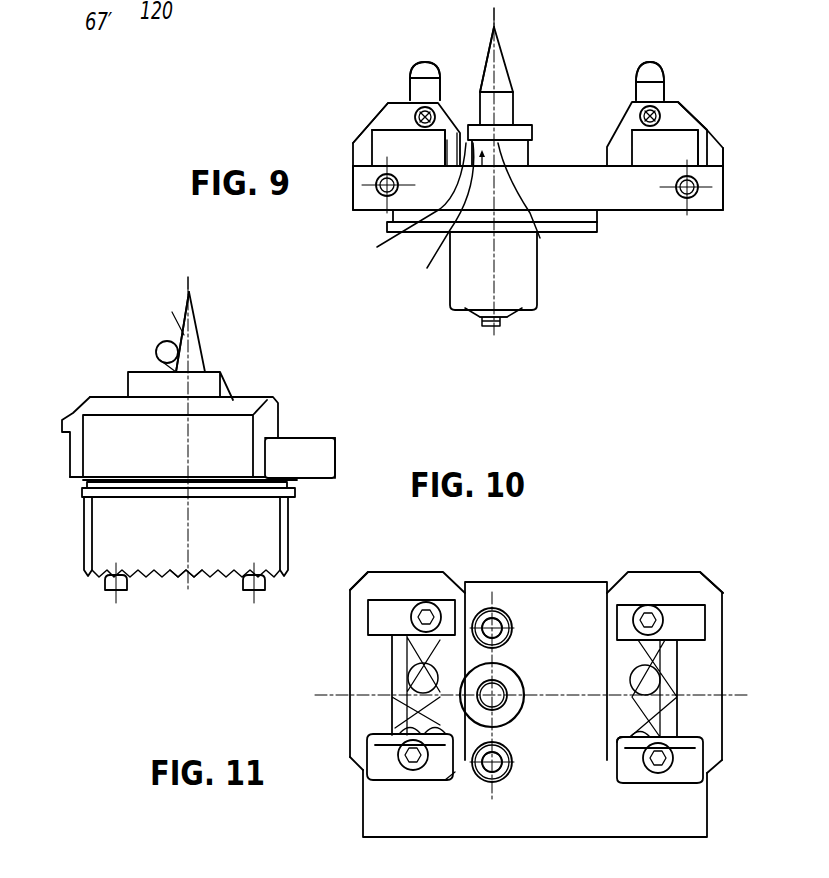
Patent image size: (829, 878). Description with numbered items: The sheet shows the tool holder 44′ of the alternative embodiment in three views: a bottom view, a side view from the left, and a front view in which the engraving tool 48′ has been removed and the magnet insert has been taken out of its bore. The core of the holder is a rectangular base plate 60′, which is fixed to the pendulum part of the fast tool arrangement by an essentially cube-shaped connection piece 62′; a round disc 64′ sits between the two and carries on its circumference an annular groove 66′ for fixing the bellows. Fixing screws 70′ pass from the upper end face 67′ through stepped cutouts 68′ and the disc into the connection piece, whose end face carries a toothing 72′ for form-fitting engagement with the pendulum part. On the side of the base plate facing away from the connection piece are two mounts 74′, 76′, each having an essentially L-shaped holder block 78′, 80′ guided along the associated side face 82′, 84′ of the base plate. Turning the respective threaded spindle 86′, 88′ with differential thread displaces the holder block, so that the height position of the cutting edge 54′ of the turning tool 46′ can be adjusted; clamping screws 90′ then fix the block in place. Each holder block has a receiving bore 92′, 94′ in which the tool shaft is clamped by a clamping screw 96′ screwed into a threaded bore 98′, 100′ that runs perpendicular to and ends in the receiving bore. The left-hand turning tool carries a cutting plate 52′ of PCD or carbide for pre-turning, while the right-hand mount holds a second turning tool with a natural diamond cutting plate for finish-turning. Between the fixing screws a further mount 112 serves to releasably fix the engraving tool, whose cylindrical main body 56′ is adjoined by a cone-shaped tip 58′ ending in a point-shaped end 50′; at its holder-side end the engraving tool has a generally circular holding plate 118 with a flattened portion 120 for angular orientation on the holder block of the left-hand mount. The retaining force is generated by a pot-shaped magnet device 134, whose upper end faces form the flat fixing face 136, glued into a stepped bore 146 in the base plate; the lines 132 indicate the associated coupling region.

In FIG. 9, the tool holder 44′ is at (610, 227).
In FIG. 10, the tool holder 44′ is at (305, 519).
In FIG. 11, the tool holder 44′ is at (358, 792).
In FIG. 9, the left-hand turning tool 46′ is at (413, 72).
In FIG. 10, the left-hand turning tool 46′ is at (160, 344).
In FIG. 11, the left-hand turning tool 46′ is at (417, 689).
In FIG. 9, the engraving tool 48′ is at (505, 77).
In FIG. 10, the engraving tool 48′ is at (202, 347).
In FIG. 9, the point-shaped end 50′ is at (497, 24).
In FIG. 10, the point-shaped end 50′ is at (193, 291).
In FIG. 9, the cutting plate 52′ is at (413, 88).
In FIG. 10, the cutting plate 52′ is at (153, 361).
In FIG. 11, the cutting plate 52′ is at (410, 683).
In FIG. 9, the cutting edge 54′ is at (425, 62).
In FIG. 10, the cutting edge 54′ is at (184, 333).
In FIG. 11, the cutting edge 54′ is at (403, 706).
In FIG. 9, the main body 56′ is at (507, 110).
In FIG. 10, the main body 56′ is at (204, 364).
In FIG. 9, the tip 58′ is at (486, 67).
In FIG. 10, the tip 58′ is at (197, 330).
In FIG. 9, the base plate 60′ is at (568, 202).
In FIG. 10, the base plate 60′ is at (312, 474).
In FIG. 11, the base plate 60′ is at (570, 612).
In FIG. 9, the connection piece 62′ is at (482, 279).
In FIG. 10, the connection piece 62′ is at (126, 540).
In FIG. 9, the round disc 64′ is at (440, 223).
In FIG. 10, the round disc 64′ is at (220, 497).
In FIG. 9, the annular groove 66′ is at (392, 216).
In FIG. 10, the annular groove 66′ is at (87, 486).
In FIG. 9, the end face 67′ is at (596, 166).
In FIG. 10, the end face 67′ is at (302, 437).
In FIG. 11, the end face 67′ is at (372, 816).
In FIG. 11, the stepped cutout 68′ is at (488, 613).
In FIG. 9, the fixing screw 70′ is at (480, 316).
In FIG. 10, the fixing screw 70′ is at (120, 590).
In FIG. 11, the fixing screw 70′ is at (507, 638).
In FIG. 9, the toothing 72′ is at (510, 314).
In FIG. 10, the toothing 72′ is at (210, 580).
In FIG. 9, the first mount 74′ is at (353, 143).
In FIG. 10, the first mount 74′ is at (77, 409).
In FIG. 11, the first mount 74′ is at (355, 593).
In FIG. 9, the second mount 76′ is at (702, 123).
In FIG. 11, the second mount 76′ is at (703, 582).
In FIG. 9, the holder block 78′ is at (353, 168).
In FIG. 10, the holder block 78′ is at (240, 459).
In FIG. 11, the holder block 78′ is at (357, 613).
In FIG. 9, the holder block 80′ is at (718, 149).
In FIG. 11, the holder block 80′ is at (713, 613).
In FIG. 9, the side face 82′ is at (360, 193).
In FIG. 10, the side face 82′ is at (334, 460).
In FIG. 11, the side face 82′ is at (363, 780).
In FIG. 9, the side face 84′ is at (724, 197).
In FIG. 11, the side face 84′ is at (707, 818).
In FIG. 9, the threaded spindle 86′ is at (404, 186).
In FIG. 9, the threaded spindle 88′ is at (676, 190).
In FIG. 11, the clamping screw 90′ is at (420, 609).
In FIG. 11, the receiving bore 92′ is at (428, 668).
In FIG. 11, the receiving bore 94′ is at (668, 700).
In FIG. 9, the clamping screw 96′ is at (434, 109).
In FIG. 11, the clamping screw 96′ is at (400, 731).
In FIG. 9, the threaded bore 98′ is at (419, 132).
In FIG. 11, the threaded bore 98′ is at (455, 771).
In FIG. 9, the threaded bore 100′ is at (665, 148).
In FIG. 11, the threaded bore 100′ is at (620, 742).
In FIG. 9, the further mount 112 is at (478, 168).
In FIG. 9, the holding plate 118 is at (535, 131).
In FIG. 9, the flattened portion 120 is at (403, 209).
In FIG. 9, the actuation line 132 is at (436, 220).
In FIG. 9, the pot-shaped magnet device 134 is at (531, 151).
In FIG. 9, the fixing face 136 is at (536, 203).
In FIG. 11, the stepped bore 146 is at (513, 686).